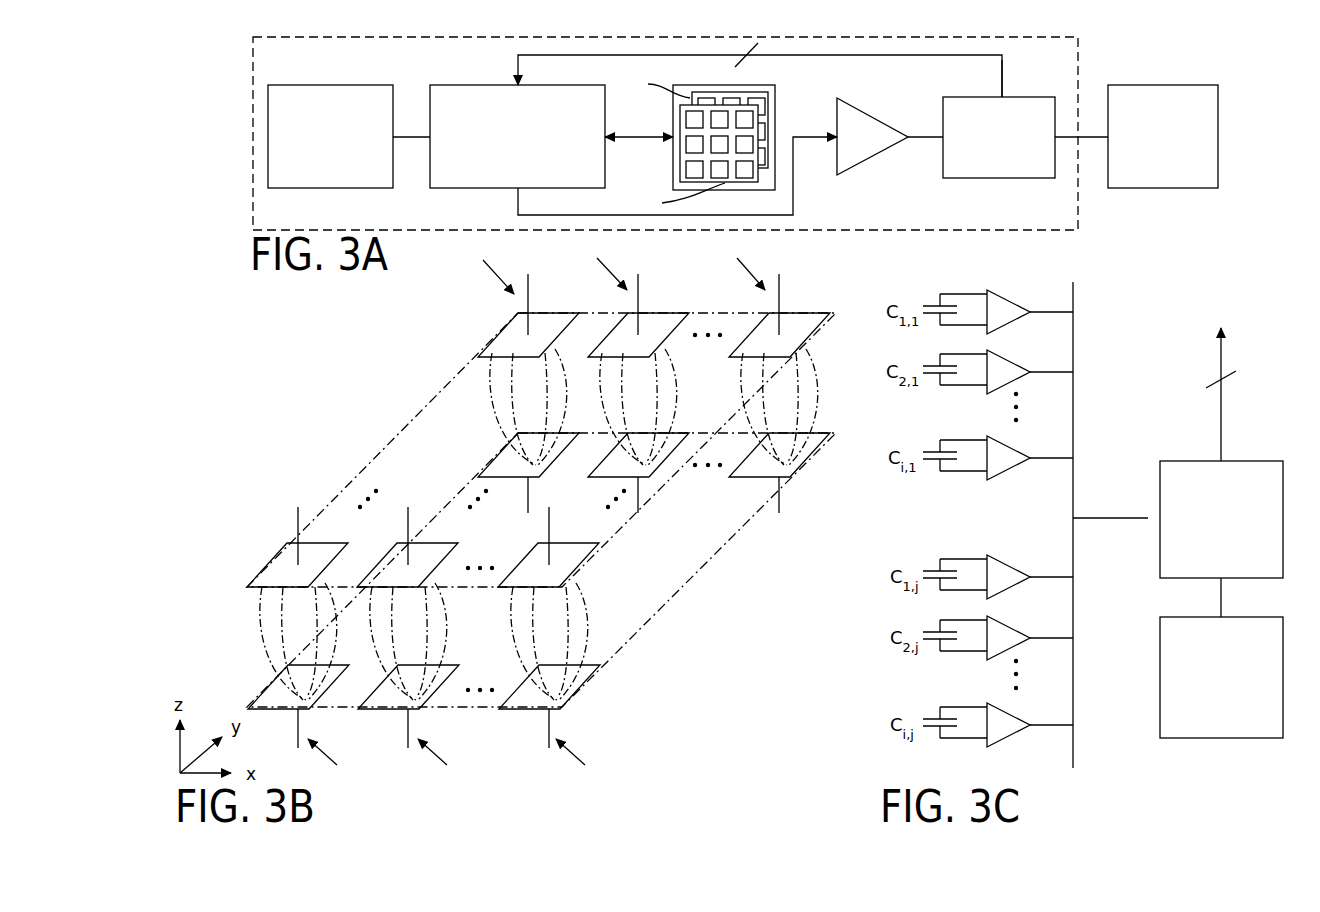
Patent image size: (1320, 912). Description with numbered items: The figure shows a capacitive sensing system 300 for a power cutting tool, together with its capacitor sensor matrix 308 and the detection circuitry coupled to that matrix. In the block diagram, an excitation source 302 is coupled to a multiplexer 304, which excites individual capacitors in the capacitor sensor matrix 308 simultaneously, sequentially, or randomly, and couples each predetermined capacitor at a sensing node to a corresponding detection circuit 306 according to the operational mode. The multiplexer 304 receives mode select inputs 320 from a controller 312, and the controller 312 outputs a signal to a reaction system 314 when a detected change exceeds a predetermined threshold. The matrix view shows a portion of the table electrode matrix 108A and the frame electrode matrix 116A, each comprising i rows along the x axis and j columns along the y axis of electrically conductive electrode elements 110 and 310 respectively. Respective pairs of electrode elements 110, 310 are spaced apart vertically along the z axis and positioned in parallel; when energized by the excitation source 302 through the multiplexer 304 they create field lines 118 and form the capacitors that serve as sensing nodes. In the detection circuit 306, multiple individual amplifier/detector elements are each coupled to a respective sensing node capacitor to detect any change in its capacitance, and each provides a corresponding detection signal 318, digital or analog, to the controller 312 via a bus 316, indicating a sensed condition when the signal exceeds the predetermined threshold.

In FIG. 3A, the capacitive sensing system 300 is at (1081, 75).
In FIG. 3A, the excitation source 302 is at (330, 136).
In FIG. 3A, the multiplexer 304 is at (517, 136).
In FIG. 3C, the multiplexer 304 is at (1222, 280).
In FIG. 3A, the detection circuit 306 is at (872, 136).
In FIG. 3C, the detection circuit 306 is at (992, 290).
In FIG. 3A, the capacitor sensor matrix 308 is at (776, 106).
In FIG. 3B, the capacitor sensor matrix 308 is at (394, 356).
In FIG. 3A, the controller 312 is at (999, 137).
In FIG. 3C, the controller 312 is at (1221, 519).
In FIG. 3A, the reaction system 314 is at (1163, 136).
In FIG. 3C, the reaction system 314 is at (1221, 677).
In FIG. 3C, the bus 316 is at (1077, 752).
In FIG. 3C, the detection signal 318 is at (1047, 312).
In FIG. 3A, the mode select inputs 320 is at (1003, 83).
In FIG. 3C, the mode select inputs 320 is at (1224, 426).
In FIG. 3B, the frame electrode matrix 116A is at (400, 432).
In FIG. 3B, the table electrode matrix 108A is at (665, 600).
In FIG. 3B, the electrically conductive electrode elements 310 is at (497, 342).
In FIG. 3B, the electrically conductive electrode elements 110 is at (490, 470).
In FIG. 3B, the field lines 118 is at (495, 445).